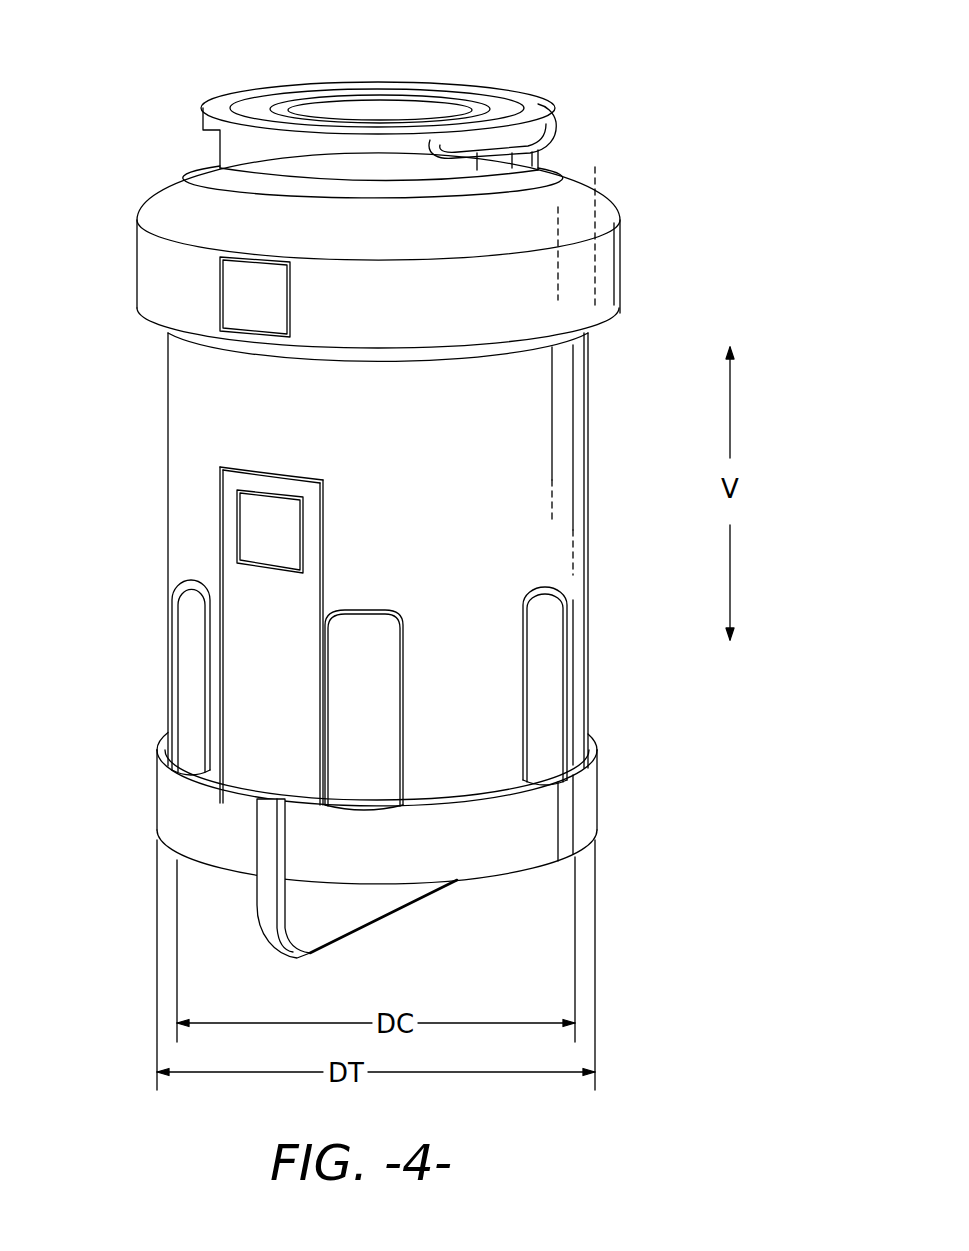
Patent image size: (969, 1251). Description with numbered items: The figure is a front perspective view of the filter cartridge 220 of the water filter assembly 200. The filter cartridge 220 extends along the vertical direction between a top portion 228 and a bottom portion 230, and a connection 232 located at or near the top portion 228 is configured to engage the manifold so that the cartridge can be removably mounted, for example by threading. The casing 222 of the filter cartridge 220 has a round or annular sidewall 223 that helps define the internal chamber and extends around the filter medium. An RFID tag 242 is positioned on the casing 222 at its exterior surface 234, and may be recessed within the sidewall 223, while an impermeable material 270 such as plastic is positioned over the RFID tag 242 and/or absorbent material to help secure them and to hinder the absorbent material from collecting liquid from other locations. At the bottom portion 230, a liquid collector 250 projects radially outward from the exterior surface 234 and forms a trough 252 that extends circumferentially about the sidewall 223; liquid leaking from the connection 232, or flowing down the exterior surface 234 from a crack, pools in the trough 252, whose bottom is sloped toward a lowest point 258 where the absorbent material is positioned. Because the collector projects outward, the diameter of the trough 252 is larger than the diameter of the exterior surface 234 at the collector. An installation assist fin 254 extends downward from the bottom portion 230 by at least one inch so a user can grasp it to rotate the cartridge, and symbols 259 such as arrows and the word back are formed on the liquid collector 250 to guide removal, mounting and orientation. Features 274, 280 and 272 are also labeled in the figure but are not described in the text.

The water filter assembly 200 is at (376, 491).
The connection 232 is at (535, 88).
The top portion 228 is at (603, 160).
The filter cartridge 220 is at (588, 273).
The casing 222 is at (164, 337).
The sidewall 223 is at (590, 447).
The exterior surface 234 is at (207, 513).
The panel edge 274 is at (217, 477).
The impermeable material 270 is at (313, 487).
The RFID tag 242 is at (283, 513).
The panel rib 280 is at (327, 587).
The bottom portion 230 is at (600, 723).
The left slot 272 is at (217, 777).
The lowest point 258 is at (262, 793).
The trough 252 is at (470, 790).
The liquid collector 250 is at (582, 797).
The symbols 259 is at (400, 847).
The installation assist fin 254 is at (350, 907).